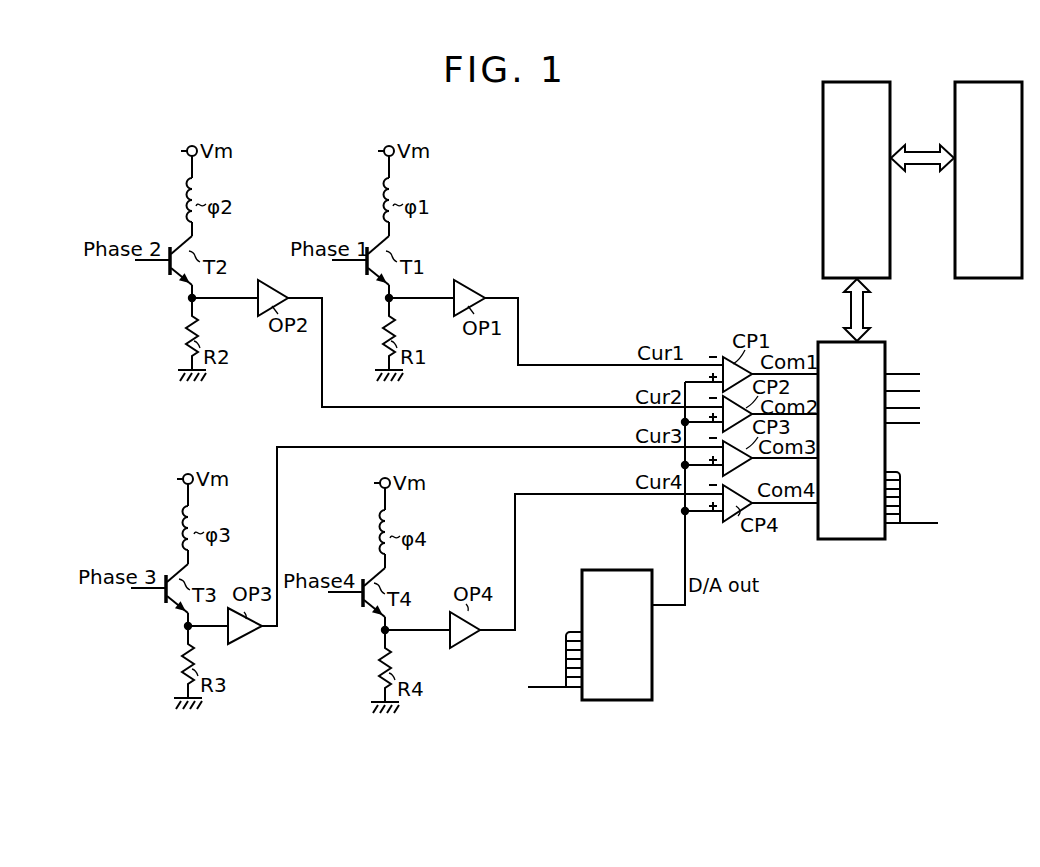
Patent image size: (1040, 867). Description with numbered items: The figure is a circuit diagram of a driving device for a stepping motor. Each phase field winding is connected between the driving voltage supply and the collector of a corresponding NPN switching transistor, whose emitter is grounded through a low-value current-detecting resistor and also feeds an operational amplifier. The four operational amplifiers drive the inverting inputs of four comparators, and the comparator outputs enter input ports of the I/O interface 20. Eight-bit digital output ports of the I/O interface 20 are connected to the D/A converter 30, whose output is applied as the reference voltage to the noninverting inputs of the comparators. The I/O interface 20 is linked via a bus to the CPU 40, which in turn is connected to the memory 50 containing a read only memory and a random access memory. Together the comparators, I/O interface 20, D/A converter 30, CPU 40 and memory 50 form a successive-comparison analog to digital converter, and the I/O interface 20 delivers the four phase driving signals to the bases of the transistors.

The I/O interface 20 is at (857, 541).
The D/A converter 30 is at (626, 701).
The CPU 40 is at (824, 223).
The memory 50 is at (950, 223).